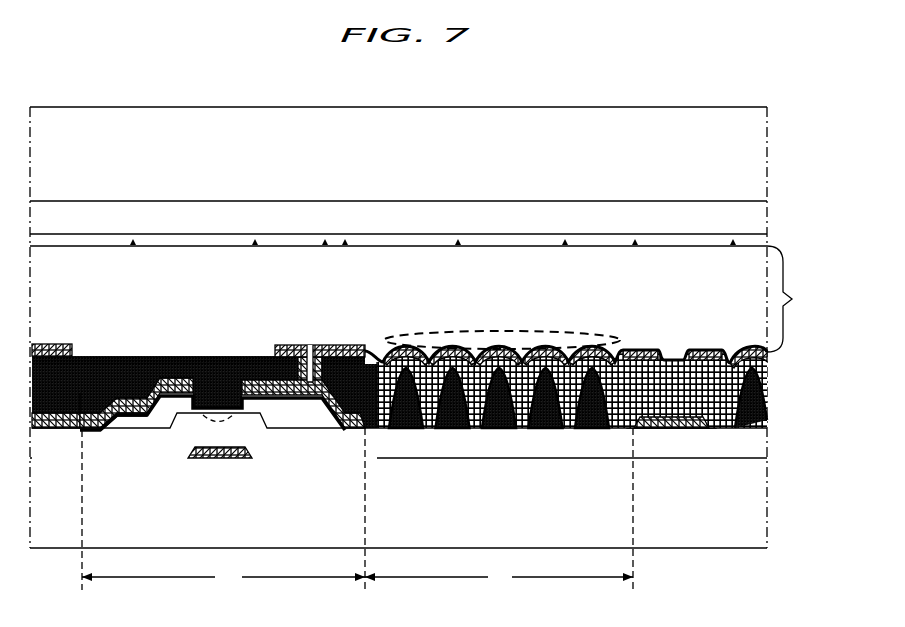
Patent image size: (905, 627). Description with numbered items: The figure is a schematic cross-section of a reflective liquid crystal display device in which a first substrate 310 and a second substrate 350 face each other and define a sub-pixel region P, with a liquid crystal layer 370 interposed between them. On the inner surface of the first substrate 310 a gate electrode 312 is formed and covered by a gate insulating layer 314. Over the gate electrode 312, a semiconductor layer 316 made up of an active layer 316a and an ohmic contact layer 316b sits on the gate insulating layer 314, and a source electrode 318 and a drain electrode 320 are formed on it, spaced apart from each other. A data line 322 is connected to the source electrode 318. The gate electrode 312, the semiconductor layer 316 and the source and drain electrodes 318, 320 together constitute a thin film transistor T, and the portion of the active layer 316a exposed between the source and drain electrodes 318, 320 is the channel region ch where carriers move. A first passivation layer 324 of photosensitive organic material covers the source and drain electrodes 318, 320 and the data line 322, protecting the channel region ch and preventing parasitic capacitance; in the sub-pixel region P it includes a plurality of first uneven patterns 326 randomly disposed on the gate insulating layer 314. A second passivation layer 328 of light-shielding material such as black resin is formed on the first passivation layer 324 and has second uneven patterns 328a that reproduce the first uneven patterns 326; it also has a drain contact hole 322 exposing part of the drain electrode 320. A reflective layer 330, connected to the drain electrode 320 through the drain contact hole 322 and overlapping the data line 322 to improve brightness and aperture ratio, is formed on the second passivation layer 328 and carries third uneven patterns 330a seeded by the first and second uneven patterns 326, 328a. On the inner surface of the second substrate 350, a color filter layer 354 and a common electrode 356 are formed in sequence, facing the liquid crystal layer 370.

The first substrate 310 is at (426, 528).
The gate electrode 312 is at (233, 460).
The gate insulating layer 314 is at (307, 446).
The semiconductor layer 316 is at (100, 484).
The active layer 316a is at (118, 434).
The ohmic contact layer 316b is at (140, 434).
The channel region ch is at (196, 422).
The source electrode 318 is at (178, 377).
The drain electrode 320 is at (268, 379).
The data line 322 is at (311, 336).
The first passivation layer 324 is at (104, 370).
The first uneven patterns 326 is at (410, 367).
The second passivation layer 328 is at (212, 356).
The second uneven patterns 328a is at (573, 355).
The reflective layer 330 is at (53, 343).
The third uneven patterns 330a is at (545, 332).
The second substrate 350 is at (424, 158).
The color filter layer 354 is at (521, 218).
The common electrode 356 is at (622, 247).
The liquid crystal layer 370 is at (801, 299).
The thin film transistor T is at (223, 509).
The sub-pixel region P is at (499, 509).